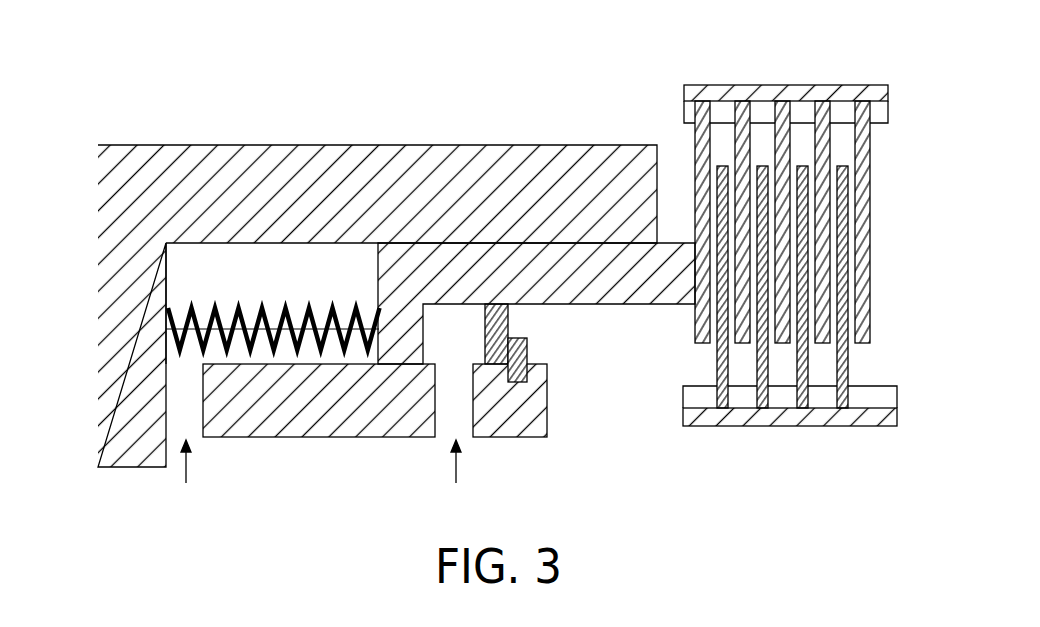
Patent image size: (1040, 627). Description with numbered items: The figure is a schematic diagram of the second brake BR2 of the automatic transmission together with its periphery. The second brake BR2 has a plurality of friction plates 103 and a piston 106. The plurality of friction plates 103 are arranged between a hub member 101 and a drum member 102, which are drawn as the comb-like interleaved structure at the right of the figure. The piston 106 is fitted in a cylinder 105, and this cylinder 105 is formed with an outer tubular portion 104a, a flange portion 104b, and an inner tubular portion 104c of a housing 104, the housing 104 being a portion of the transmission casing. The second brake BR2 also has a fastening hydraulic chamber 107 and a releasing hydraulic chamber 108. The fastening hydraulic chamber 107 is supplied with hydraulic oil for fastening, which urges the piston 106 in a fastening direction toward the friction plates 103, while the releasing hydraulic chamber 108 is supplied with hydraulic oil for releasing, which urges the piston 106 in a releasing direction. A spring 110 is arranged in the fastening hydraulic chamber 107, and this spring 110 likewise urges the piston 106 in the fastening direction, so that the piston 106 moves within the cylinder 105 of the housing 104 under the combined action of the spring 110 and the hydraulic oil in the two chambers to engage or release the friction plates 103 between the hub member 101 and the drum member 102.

The second brake BR2 is at (114, 112).
The hub member 101 is at (752, 428).
The drum member 102 is at (756, 89).
The friction plates 103 is at (818, 258).
The housing 104 is at (347, 304).
The outer tubular portion 104a is at (413, 155).
The flange portion 104b is at (113, 458).
The inner tubular portion 104c is at (322, 438).
The cylinder 105 is at (165, 290).
The piston 106 is at (593, 306).
The fastening hydraulic chamber 107 is at (362, 285).
The releasing hydraulic chamber 108 is at (478, 345).
The spring 110 is at (165, 335).